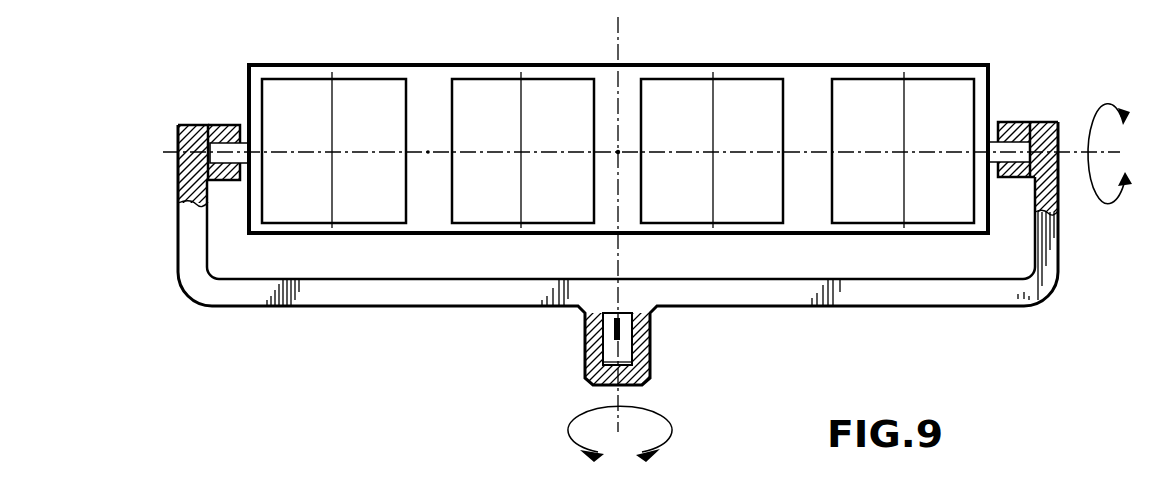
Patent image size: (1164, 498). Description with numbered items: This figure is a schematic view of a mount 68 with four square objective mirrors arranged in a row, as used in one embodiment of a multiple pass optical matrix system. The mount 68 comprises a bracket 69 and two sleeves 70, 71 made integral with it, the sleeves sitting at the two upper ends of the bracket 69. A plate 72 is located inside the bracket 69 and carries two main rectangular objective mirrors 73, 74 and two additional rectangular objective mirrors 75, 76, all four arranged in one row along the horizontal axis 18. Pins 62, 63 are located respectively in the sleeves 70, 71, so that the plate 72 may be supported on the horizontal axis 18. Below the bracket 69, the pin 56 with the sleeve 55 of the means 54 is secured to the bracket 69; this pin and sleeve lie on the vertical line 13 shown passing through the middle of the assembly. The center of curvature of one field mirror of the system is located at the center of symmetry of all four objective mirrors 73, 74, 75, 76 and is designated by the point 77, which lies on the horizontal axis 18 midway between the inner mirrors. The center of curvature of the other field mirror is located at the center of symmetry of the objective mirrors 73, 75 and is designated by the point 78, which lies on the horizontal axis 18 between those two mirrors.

The vertical axis of rotation 13 is at (618, 401).
The horizontal axis 18 is at (169, 152).
The means 54 is at (582, 249).
The sleeve 55 is at (588, 328).
The pin 56 is at (623, 330).
The pin 62 is at (218, 143).
The pin 63 is at (1002, 148).
The mount 68 is at (600, 254).
The bracket 69 is at (178, 263).
The sleeve 70 is at (192, 126).
The sleeve 71 is at (1042, 122).
The plate 72 is at (807, 73).
The main rectangular objective mirror 73 is at (510, 88).
The main rectangular objective mirror 74 is at (680, 88).
The additional rectangular objective mirror 75 is at (310, 88).
The additional rectangular objective mirror 76 is at (918, 85).
The point 77 is at (618, 152).
The point 78 is at (428, 152).